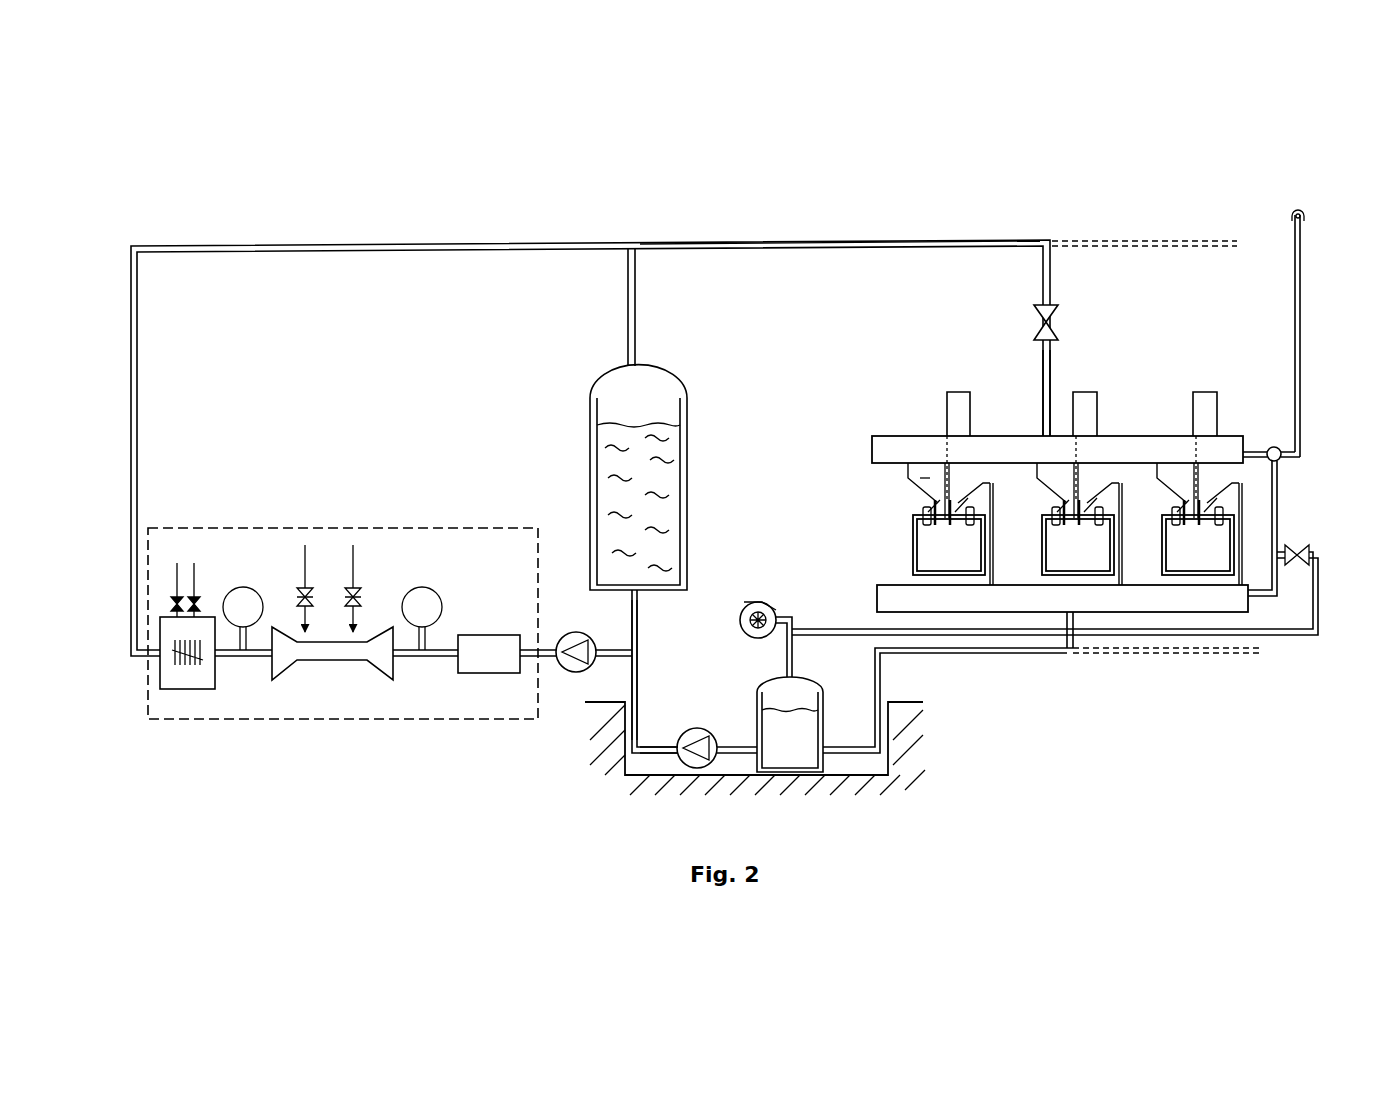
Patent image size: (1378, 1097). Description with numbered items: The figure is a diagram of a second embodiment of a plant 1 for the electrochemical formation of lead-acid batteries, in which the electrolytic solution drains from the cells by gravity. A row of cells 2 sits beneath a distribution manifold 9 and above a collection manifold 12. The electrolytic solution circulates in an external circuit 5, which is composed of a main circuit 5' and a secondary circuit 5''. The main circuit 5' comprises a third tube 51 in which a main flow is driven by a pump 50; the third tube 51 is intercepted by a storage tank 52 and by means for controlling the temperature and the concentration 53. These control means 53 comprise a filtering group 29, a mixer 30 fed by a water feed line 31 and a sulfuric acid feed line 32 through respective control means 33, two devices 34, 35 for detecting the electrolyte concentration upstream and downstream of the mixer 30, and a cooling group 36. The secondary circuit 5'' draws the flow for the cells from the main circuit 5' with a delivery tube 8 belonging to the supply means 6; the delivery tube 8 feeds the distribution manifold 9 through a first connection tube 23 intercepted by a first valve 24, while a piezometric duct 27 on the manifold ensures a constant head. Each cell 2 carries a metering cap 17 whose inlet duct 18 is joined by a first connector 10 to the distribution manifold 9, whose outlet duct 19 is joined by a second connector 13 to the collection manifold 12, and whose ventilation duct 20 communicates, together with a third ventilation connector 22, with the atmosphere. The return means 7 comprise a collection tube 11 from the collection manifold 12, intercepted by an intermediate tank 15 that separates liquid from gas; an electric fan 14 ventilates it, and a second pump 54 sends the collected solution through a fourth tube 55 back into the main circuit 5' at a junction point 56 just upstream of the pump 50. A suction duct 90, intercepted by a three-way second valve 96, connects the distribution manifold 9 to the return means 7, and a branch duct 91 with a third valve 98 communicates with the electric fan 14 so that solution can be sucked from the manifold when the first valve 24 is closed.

The plant 1 is at (297, 181).
The cell 2 is at (925, 560).
The external circuit 5 is at (567, 158).
The main circuit 5' is at (371, 360).
The secondary circuit 5'' is at (750, 388).
The supply means 6 is at (872, 290).
The return means 7 is at (1037, 706).
The delivery tube 8 is at (872, 243).
The distribution manifold 9 is at (878, 452).
The first connector 10 is at (908, 470).
The collection tube 11 is at (957, 652).
The collection manifold 12 is at (905, 590).
The second connector 13 is at (995, 548).
The electric fan 14 is at (760, 602).
The intermediate tank 15 is at (810, 735).
The metering cap 17 is at (933, 482).
The inlet duct 18 is at (945, 505).
The outlet duct 19 is at (955, 502).
The ventilation duct 20 is at (935, 498).
The third ventilation connector 22 is at (946, 398).
The first connection tube 23 is at (1050, 380).
The first valve 24 is at (1060, 320).
The piezometric duct 27 is at (1298, 340).
The filtering group 29 is at (490, 655).
The mixer 30 is at (330, 672).
The water feed line 31 is at (353, 585).
The sulfuric acid feed line 32 is at (303, 577).
The control means 33 is at (308, 593).
The device for detecting electrolyte concentration 34 is at (243, 598).
The device for detecting electrolyte concentration 35 is at (422, 598).
The cooling group 36 is at (188, 692).
The pump 50 is at (575, 632).
The third tube 51 is at (390, 244).
The storage tank 52 is at (592, 428).
The means for controlling the temperature and the concentration 53 is at (464, 528).
The second pump 54 is at (697, 768).
The fourth tube 55 is at (660, 746).
The junction point 56 is at (643, 648).
The suction duct 90 is at (1277, 510).
The branch duct 91 is at (1318, 612).
The second valve 96 is at (1268, 446).
The third valve 98 is at (1312, 556).